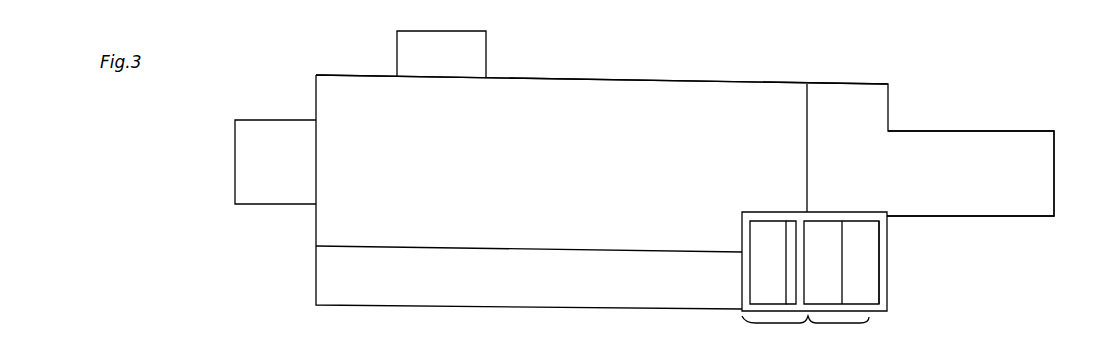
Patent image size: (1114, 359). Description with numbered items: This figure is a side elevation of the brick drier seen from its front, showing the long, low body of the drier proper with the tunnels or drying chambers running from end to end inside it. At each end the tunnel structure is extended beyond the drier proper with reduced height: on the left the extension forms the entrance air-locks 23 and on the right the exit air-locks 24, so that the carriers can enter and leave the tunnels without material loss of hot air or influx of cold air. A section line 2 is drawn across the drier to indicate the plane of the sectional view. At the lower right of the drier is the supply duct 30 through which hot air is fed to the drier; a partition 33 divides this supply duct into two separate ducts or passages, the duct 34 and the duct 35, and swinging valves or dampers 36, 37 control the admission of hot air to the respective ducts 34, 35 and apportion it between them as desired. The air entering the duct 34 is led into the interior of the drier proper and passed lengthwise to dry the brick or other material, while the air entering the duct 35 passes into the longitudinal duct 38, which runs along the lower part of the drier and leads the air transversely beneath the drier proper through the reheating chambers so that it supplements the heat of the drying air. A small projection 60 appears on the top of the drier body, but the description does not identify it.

The section line 2 is at (330, 96).
The entrance air-locks 23 is at (249, 178).
The exit air-locks 24 is at (1034, 178).
The supply duct 30 is at (814, 279).
The partition 33 is at (802, 243).
The duct 34 is at (868, 291).
The duct 35 is at (764, 277).
The swinging valve or damper 36 is at (835, 267).
The swinging valve or damper 37 is at (788, 238).
The longitudinal duct 38 is at (497, 251).
The top protrusion 60 is at (487, 32).